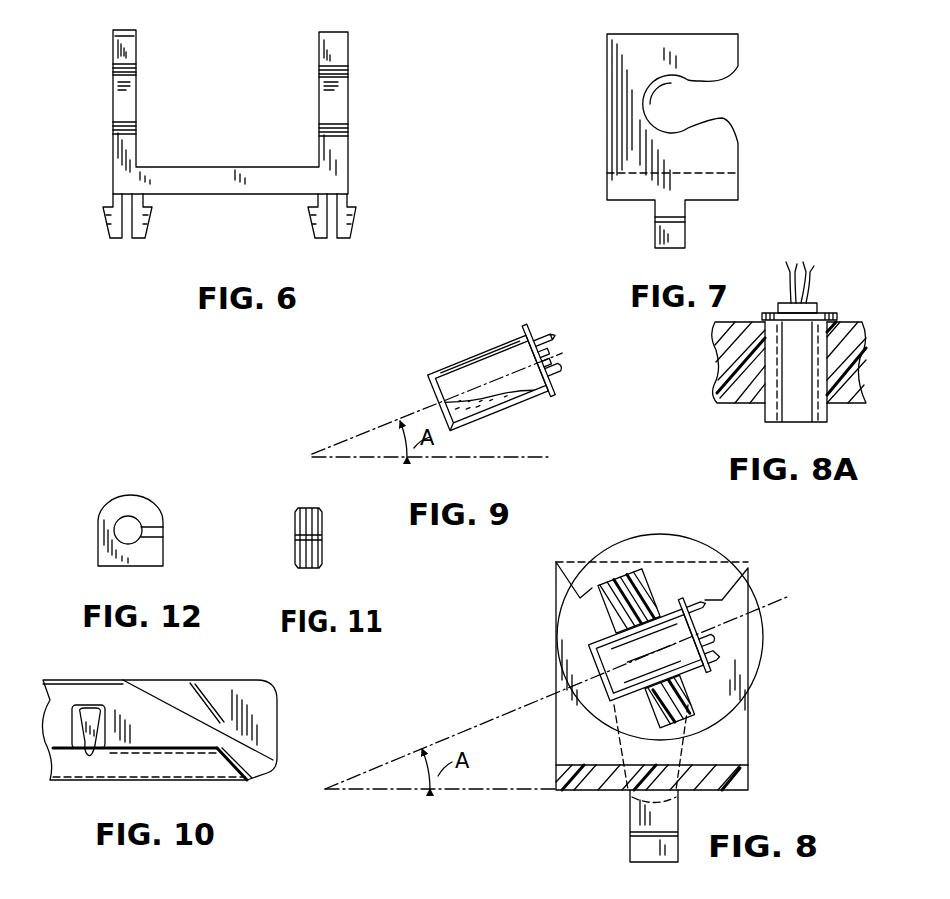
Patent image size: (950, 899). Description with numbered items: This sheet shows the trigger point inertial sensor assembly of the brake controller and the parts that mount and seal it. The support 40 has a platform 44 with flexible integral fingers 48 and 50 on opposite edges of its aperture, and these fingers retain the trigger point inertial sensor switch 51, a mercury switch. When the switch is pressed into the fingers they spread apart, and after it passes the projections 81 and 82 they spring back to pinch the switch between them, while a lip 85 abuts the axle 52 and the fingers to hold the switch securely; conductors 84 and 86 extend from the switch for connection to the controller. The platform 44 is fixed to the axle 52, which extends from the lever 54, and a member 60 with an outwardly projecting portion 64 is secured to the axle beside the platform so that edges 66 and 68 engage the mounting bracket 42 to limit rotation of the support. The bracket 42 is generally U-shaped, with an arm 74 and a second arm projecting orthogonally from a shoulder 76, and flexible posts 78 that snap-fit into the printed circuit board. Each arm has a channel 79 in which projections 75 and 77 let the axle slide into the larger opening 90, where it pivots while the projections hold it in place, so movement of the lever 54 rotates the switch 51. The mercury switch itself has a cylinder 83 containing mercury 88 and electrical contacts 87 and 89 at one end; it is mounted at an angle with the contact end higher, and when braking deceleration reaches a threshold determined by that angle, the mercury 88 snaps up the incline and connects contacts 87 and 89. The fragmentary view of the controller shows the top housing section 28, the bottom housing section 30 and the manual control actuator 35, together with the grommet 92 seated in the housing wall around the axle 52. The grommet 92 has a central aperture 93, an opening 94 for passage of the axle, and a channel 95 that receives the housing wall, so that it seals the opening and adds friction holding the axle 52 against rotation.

In FIG. 10, the top housing section 28 is at (270, 772).
In FIG. 10, the bottom housing section 30 is at (220, 778).
In FIG. 10, the manual control actuator 35 is at (260, 687).
In FIG. 8, the support 40 is at (606, 530).
In FIG. 6, the mounting bracket 42 is at (372, 34).
In FIG. 7, the mounting bracket 42 is at (748, 47).
In FIG. 8, the mounting bracket 42 is at (575, 793).
In FIG. 8, the platform 44 is at (592, 588).
In FIG. 8, the flexible finger 48 is at (713, 710).
In FIG. 8A, the flexible finger 50 is at (815, 303).
In FIG. 8, the flexible finger 50 is at (620, 582).
In FIG. 8A, the trigger point inertial sensor switch 51 is at (822, 418).
In FIG. 9, the trigger point inertial sensor switch 51 is at (425, 378).
In FIG. 8, the trigger point inertial sensor switch 51 is at (585, 665).
In FIG. 8A, the axle 52 is at (845, 322).
In FIG. 8, the lever 54 is at (667, 763).
In FIG. 10, the lever 54 is at (50, 762).
In FIG. 8, the member 60 is at (668, 530).
In FIG. 8, the outwardly projecting portion 64 is at (590, 555).
In FIG. 8, the edge 66 is at (750, 575).
In FIG. 8, the edge 68 is at (556, 565).
In FIG. 6, the arm 74 is at (130, 41).
In FIG. 7, the arm 74 is at (688, 50).
In FIG. 6, the projection 75 is at (137, 67).
In FIG. 7, the projection 75 is at (703, 80).
In FIG. 6, the shoulder 76 is at (263, 196).
In FIG. 6, the projection 77 is at (130, 118).
In FIG. 7, the projection 77 is at (700, 122).
In FIG. 6, the flexible post 78 is at (115, 240).
In FIG. 7, the flexible post 78 is at (682, 238).
In FIG. 8, the flexible post 78 is at (633, 843).
In FIG. 6, the channel 79 is at (130, 93).
In FIG. 7, the channel 79 is at (717, 110).
In FIG. 8, the projection 81 is at (735, 670).
In FIG. 8, the projection 82 is at (700, 600).
In FIG. 9, the cylinder 83 is at (478, 352).
In FIG. 9, the conductor 84 is at (562, 375).
In FIG. 8, the conductor 84 is at (735, 645).
In FIG. 8A, the lip 85 is at (770, 313).
In FIG. 9, the lip 85 is at (550, 392).
In FIG. 8A, the conductor 86 is at (812, 278).
In FIG. 9, the conductor 86 is at (534, 333).
In FIG. 8, the conductor 86 is at (725, 575).
In FIG. 8A, the electrical contact 87 is at (795, 285).
In FIG. 9, the electrical contact 87 is at (556, 358).
In FIG. 9, the mercury 88 is at (480, 415).
In FIG. 9, the electrical contact 89 is at (548, 338).
In FIG. 7, the opening 90 is at (652, 110).
In FIG. 10, the grommet 92 is at (100, 705).
In FIG. 11, the grommet 92 is at (289, 552).
In FIG. 12, the grommet 92 is at (135, 493).
In FIG. 12, the central aperture 93 is at (118, 522).
In FIG. 12, the opening 94 is at (163, 530).
In FIG. 11, the channel 95 is at (305, 512).